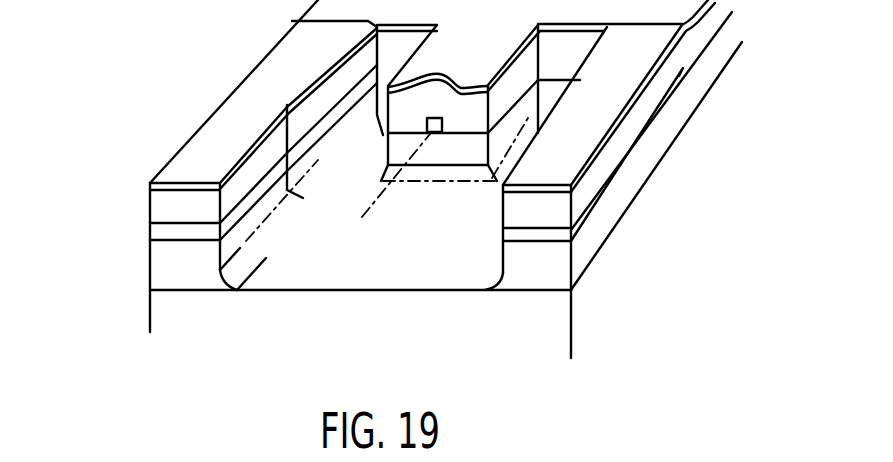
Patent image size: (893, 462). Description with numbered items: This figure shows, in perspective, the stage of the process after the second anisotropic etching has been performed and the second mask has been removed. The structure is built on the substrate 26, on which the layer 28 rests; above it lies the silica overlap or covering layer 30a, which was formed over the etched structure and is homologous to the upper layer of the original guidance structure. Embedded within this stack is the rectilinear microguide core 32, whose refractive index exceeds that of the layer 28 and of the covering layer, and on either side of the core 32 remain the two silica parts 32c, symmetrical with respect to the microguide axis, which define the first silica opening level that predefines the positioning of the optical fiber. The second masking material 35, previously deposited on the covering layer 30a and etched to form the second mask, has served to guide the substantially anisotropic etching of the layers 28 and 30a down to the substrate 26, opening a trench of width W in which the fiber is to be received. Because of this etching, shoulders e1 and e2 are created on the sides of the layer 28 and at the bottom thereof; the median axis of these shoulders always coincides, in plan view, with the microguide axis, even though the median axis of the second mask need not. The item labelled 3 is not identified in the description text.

The second masking material 35 is at (243, 97).
The silica overlap or covering layer 30a is at (165, 203).
The silica parts 32c is at (158, 232).
The layer 28 is at (548, 265).
The substrate 26 is at (552, 307).
The microguide core 32 is at (433, 118).
The center line / hidden edge 3 is at (382, 168).
The shoulder e1 is at (220, 280).
The shoulder e2 is at (498, 282).
The width W is at (485, 290).